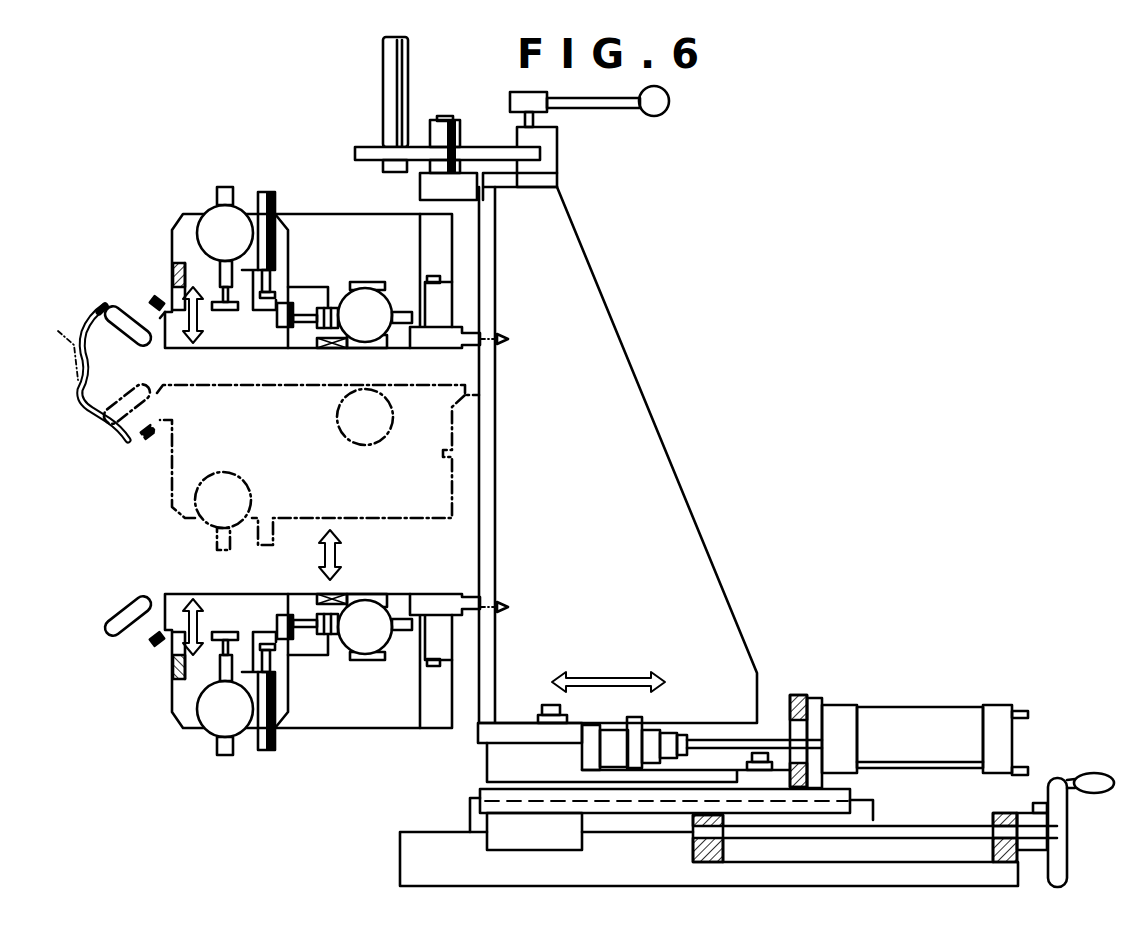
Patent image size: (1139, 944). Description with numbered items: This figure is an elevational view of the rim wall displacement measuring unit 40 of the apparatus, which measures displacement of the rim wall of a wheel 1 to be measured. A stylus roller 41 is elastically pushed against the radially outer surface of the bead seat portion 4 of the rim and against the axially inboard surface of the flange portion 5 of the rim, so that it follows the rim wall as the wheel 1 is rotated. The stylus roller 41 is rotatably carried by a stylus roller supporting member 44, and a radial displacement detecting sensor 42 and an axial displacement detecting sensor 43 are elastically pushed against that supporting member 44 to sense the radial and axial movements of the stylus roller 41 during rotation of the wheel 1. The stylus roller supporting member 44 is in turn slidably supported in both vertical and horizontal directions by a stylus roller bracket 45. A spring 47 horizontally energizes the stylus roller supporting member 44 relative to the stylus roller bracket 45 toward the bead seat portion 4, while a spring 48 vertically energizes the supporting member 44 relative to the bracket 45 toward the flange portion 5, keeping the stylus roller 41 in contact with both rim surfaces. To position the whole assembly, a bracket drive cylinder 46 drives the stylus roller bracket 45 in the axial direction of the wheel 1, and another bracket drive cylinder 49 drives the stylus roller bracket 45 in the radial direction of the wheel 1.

The wheel 1 is at (63, 347).
The bead seat portion 4 is at (112, 322).
The flange portion 5 is at (106, 304).
The rim wall displacement measuring unit 40 is at (300, 213).
The stylus roller 41 is at (132, 299).
The radial displacement detecting sensor 42 is at (372, 296).
The axial displacement detecting sensor 43 is at (216, 222).
The stylus roller supporting member 44 is at (180, 263).
The stylus roller bracket 45 is at (340, 236).
The bracket drive cylinder 46 is at (265, 192).
The spring 47 is at (340, 349).
The spring 48 is at (171, 292).
The bracket drive cylinder 49 is at (908, 722).